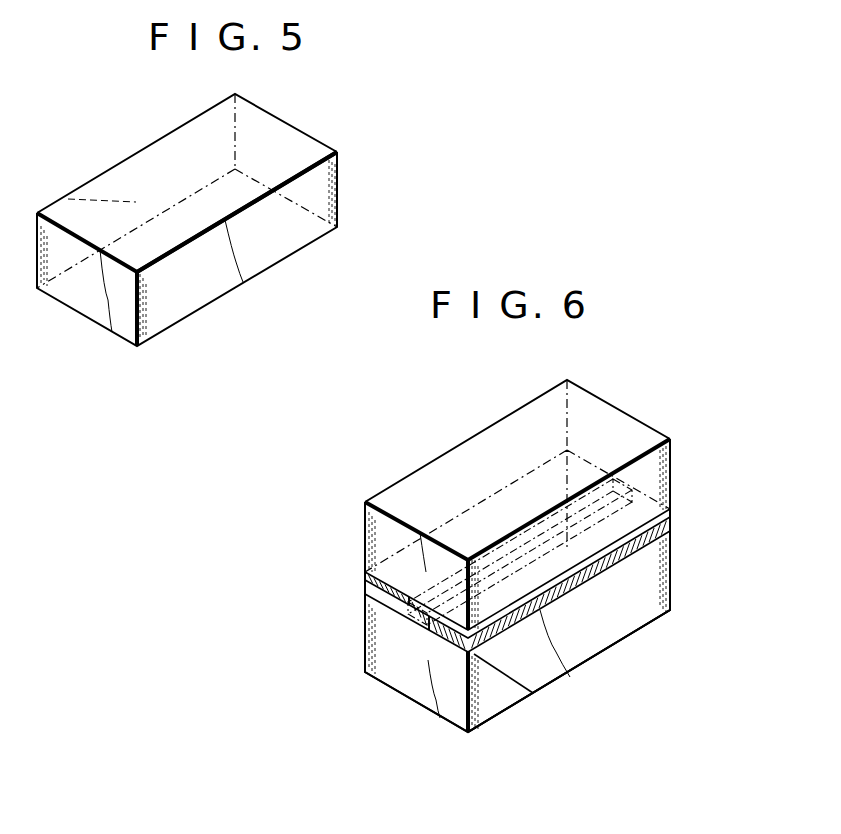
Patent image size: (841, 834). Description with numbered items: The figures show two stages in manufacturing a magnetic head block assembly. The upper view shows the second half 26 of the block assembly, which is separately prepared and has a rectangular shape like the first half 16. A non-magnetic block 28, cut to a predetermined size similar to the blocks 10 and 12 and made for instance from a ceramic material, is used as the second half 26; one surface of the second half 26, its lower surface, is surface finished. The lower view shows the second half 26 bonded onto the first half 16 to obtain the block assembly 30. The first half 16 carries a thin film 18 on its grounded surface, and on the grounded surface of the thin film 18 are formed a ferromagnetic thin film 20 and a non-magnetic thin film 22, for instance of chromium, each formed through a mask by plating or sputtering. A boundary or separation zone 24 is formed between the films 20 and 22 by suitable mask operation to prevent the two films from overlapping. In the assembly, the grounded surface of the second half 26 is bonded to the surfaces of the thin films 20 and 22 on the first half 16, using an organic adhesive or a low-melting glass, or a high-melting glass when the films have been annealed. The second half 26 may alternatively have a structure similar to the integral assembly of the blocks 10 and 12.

In FIG. 6, the block 10 is at (590, 643).
In FIG. 6, the block 12 is at (497, 693).
In FIG. 6, the first half 16 is at (362, 641).
In FIG. 6, the thin film 18 is at (547, 602).
In FIG. 6, the ferromagnetic thin film 20 is at (364, 579).
In FIG. 6, the non-magnetic thin film 22 is at (671, 512).
In FIG. 6, the boundary zone 24 is at (412, 617).
In FIG. 5, the second half 26 is at (118, 169).
In FIG. 6, the second half 26 is at (363, 527).
In FIG. 5, the non-magnetic block 28 is at (227, 280).
In FIG. 6, the block assembly 30 is at (651, 384).